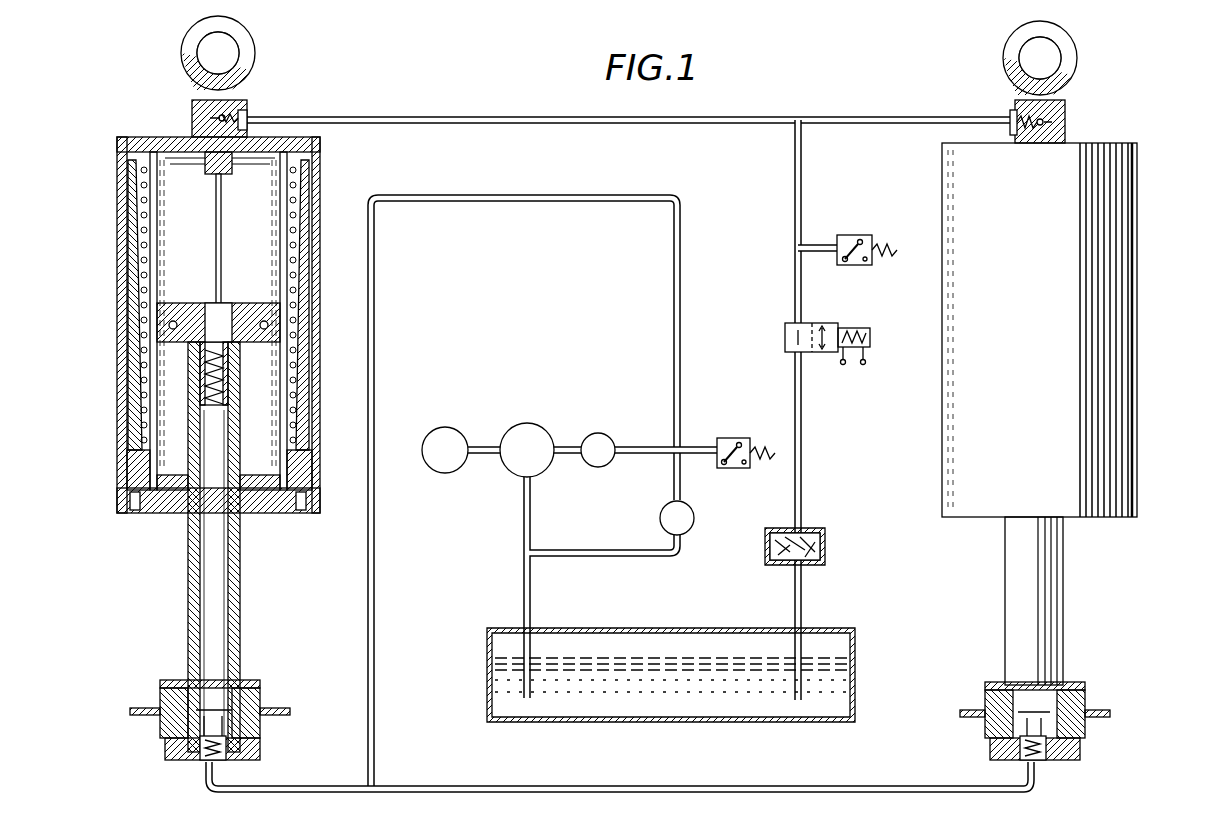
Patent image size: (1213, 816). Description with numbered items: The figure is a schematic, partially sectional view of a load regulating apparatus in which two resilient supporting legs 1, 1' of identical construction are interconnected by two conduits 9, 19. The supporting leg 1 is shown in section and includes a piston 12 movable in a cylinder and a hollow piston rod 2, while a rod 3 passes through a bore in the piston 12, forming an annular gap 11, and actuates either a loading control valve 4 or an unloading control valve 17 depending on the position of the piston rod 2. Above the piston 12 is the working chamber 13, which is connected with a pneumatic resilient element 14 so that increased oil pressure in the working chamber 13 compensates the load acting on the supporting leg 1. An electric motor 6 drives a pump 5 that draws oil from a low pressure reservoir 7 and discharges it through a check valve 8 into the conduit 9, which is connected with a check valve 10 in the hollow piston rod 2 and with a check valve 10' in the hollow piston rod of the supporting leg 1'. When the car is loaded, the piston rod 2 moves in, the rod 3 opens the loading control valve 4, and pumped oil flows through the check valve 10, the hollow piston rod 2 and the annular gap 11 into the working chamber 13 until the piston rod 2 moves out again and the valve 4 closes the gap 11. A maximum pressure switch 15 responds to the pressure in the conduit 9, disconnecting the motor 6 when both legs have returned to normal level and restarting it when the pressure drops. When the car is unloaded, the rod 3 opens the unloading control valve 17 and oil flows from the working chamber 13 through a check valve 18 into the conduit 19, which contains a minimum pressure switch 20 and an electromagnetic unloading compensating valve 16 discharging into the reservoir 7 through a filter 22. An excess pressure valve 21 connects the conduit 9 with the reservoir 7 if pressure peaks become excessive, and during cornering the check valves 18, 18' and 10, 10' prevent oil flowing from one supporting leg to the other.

The resilient supporting leg 1 is at (189, 325).
The resilient supporting leg 1' is at (1068, 353).
The hollow piston rod 2 is at (188, 568).
The rod 3 is at (216, 240).
The loading control valve 4 is at (232, 355).
The pump 5 is at (530, 424).
The electric motor 6 is at (447, 427).
The low pressure reservoir 7 is at (487, 662).
The check valve 8 is at (607, 436).
The conduit 9 is at (375, 575).
The check valve 10 is at (210, 704).
The check valve 10' is at (1037, 702).
The annular gap 11 is at (230, 303).
The piston 12 is at (290, 305).
The working chamber 13 is at (163, 212).
The pneumatic resilient element 14 is at (140, 292).
The maximum pressure switch 15 is at (740, 438).
The electromagnetic unloading compensating valve 16 is at (812, 324).
The unloading control valve 17 is at (190, 135).
The check valve 18 is at (250, 101).
The check valve 18' is at (1061, 115).
The conduit 19 is at (570, 124).
The minimum pressure switch 20 is at (865, 235).
The excess pressure valve 21 is at (694, 518).
The filter 22 is at (812, 528).